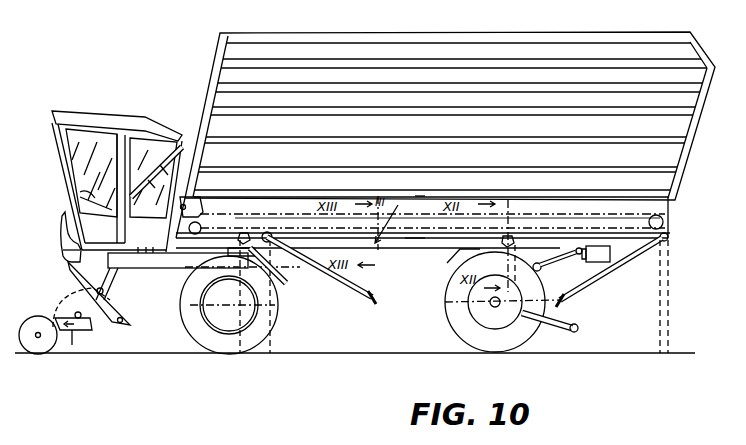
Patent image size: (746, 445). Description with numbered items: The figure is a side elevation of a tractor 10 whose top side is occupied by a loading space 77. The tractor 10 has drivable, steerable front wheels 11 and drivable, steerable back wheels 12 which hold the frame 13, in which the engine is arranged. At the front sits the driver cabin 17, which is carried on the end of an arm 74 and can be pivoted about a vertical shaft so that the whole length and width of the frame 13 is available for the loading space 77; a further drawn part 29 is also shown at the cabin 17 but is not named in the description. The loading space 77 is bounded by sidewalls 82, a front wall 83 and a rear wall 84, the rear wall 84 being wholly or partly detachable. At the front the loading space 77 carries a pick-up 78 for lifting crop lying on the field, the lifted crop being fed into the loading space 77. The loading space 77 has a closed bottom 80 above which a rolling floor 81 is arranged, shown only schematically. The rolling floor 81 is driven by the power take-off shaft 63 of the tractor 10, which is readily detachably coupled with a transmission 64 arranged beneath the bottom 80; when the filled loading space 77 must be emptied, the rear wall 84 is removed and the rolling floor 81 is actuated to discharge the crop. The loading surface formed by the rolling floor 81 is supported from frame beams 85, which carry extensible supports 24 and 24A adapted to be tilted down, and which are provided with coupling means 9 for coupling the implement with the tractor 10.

The loading space 77 is at (452, 103).
The front wall 83 is at (206, 86).
The rear wall 84 is at (697, 146).
The sidewalls 82 is at (605, 155).
The driver cabin 17 is at (88, 112).
The hydraulic cylinder 29 is at (155, 130).
The closed bottom 80 is at (622, 232).
The rolling floor 81 is at (416, 196).
The frame beams 85 is at (418, 240).
The coupling means 9 is at (242, 232).
The frame 13 is at (395, 310).
The tractor 10 is at (335, 308).
The arm 74 is at (165, 270).
The pick-up 78 is at (63, 287).
The front wheels 11 is at (190, 326).
The back wheels 12 is at (462, 328).
The extensible support 24 is at (660, 295).
The extensible support 24A is at (358, 262).
The power take-off shaft 63 is at (566, 258).
The transmission 64 is at (606, 256).